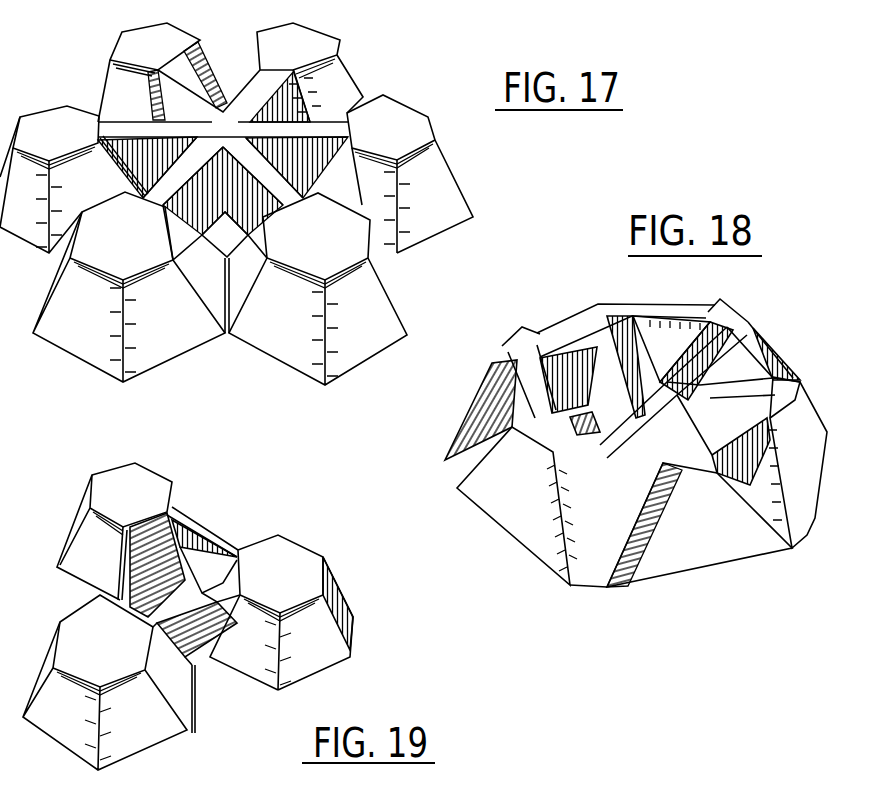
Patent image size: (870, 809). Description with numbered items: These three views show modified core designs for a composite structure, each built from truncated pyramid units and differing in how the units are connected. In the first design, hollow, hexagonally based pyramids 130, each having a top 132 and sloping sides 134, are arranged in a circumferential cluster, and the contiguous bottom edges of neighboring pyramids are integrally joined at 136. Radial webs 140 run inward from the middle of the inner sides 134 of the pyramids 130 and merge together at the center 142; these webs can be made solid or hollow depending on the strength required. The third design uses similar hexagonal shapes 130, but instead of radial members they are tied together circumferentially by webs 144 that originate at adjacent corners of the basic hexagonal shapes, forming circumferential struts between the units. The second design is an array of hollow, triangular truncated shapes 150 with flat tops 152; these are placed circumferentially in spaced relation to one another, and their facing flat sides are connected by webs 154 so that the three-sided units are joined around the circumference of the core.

In FIG. 17, the hollow hexagonally based pyramid 130 is at (457, 155).
In FIG. 19, the hollow hexagonally based pyramid 130 is at (177, 471).
In FIG. 17, the top 132 is at (168, 54).
In FIG. 19, the top 132 is at (145, 507).
In FIG. 17, the side 134 is at (94, 354).
In FIG. 19, the side 134 is at (76, 744).
In FIG. 17, the joined bottom edge 136 is at (398, 253).
In FIG. 17, the radial web 140 is at (231, 92).
In FIG. 17, the center 142 is at (238, 136).
In FIG. 19, the circumferential web 144 is at (202, 523).
In FIG. 18, the hollow triangular truncated shape 150 is at (493, 393).
In FIG. 18, the flat top 152 is at (722, 305).
In FIG. 18, the web 154 is at (559, 322).